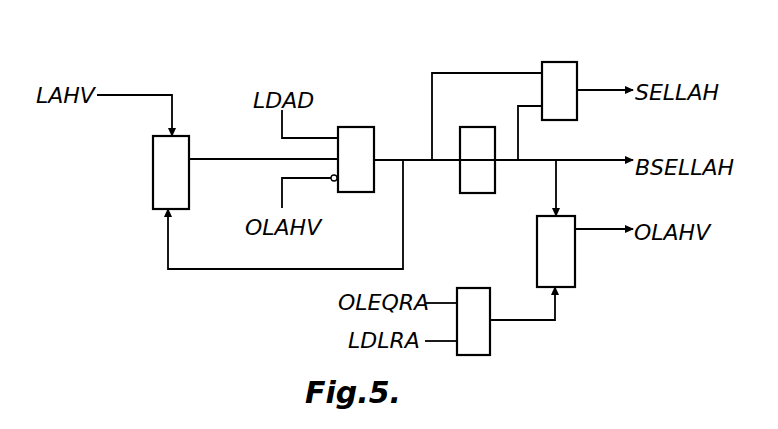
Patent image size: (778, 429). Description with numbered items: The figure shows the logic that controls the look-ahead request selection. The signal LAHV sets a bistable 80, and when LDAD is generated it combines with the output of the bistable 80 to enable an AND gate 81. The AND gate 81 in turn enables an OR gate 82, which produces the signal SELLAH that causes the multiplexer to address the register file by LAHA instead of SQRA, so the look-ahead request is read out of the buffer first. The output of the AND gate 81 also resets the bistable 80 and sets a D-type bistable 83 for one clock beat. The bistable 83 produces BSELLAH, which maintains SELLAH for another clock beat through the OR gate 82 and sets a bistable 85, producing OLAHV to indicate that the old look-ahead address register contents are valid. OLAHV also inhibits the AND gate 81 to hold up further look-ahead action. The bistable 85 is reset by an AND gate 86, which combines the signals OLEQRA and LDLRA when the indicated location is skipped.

The bistable 80 is at (153, 173).
The AND gate 81 is at (353, 130).
The OR gate 82 is at (555, 60).
The D-type bistable 83 is at (473, 191).
The bistable 85 is at (537, 255).
The AND gate 86 is at (485, 343).